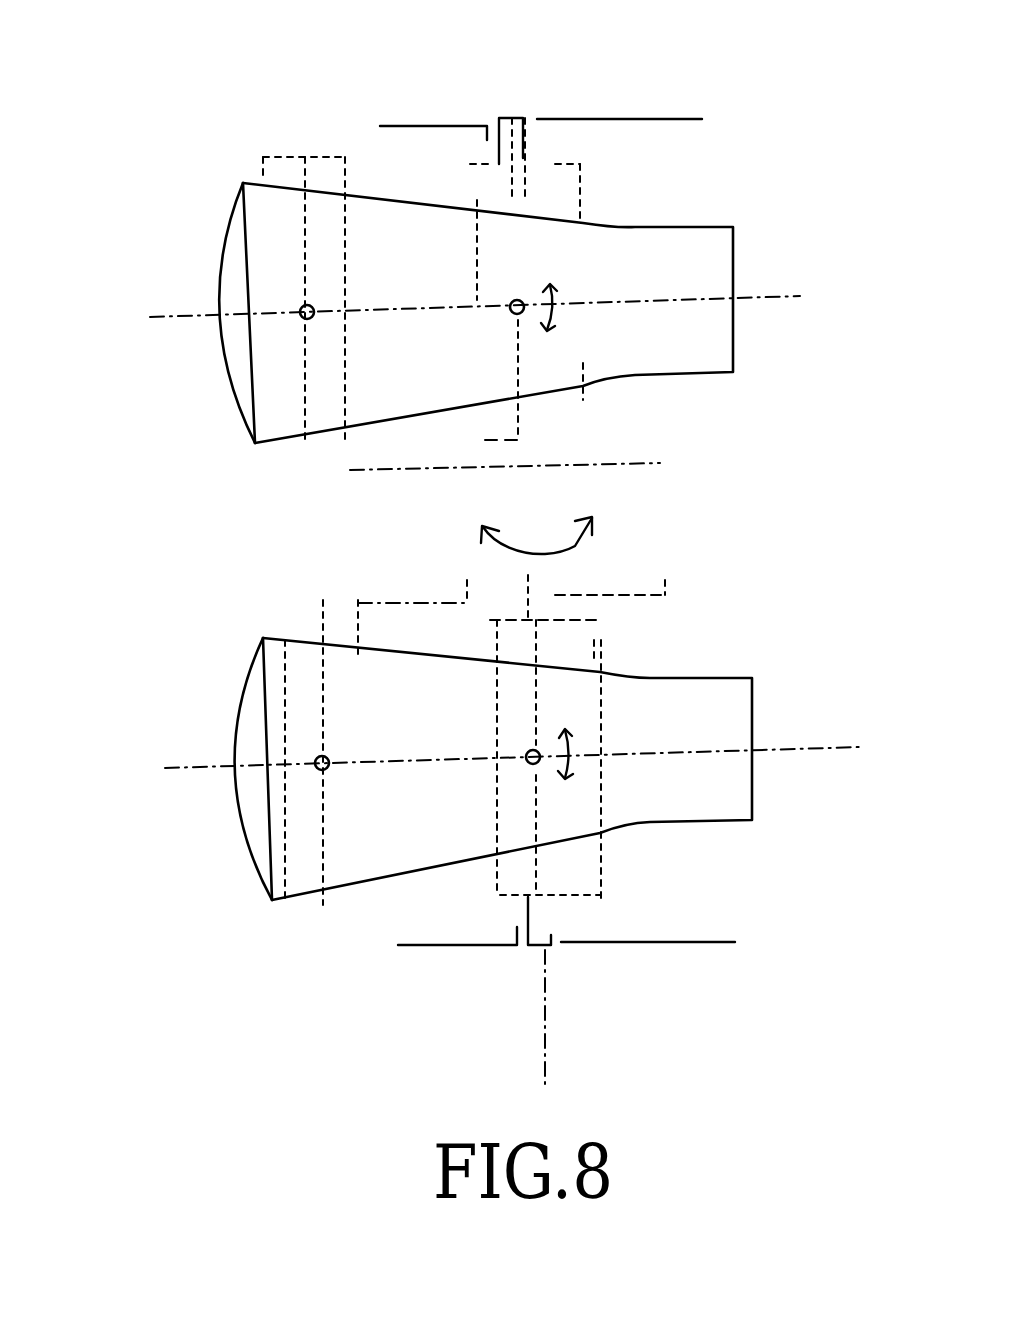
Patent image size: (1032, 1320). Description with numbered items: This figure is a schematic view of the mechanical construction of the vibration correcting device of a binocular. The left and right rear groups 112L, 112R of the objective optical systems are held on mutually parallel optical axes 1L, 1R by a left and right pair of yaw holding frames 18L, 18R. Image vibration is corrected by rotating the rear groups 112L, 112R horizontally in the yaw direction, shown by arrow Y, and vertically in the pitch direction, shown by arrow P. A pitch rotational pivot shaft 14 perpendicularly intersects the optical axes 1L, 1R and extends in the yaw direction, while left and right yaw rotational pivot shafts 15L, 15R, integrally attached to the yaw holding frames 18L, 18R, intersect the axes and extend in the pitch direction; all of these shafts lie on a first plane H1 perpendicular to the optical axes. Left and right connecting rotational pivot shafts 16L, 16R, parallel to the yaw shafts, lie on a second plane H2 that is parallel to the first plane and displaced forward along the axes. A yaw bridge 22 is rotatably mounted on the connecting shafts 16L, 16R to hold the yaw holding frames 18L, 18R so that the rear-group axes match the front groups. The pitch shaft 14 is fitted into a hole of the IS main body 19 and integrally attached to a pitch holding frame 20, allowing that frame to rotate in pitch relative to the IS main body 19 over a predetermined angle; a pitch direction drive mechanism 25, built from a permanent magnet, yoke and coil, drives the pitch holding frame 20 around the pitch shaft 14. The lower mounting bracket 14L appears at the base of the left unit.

The optical axis 1R is at (775, 298).
The optical axis 1L is at (800, 747).
The pitch rotational pivot shaft 14 is at (522, 118).
The support member 14L is at (548, 905).
The yaw rotational pivot shaft 15R is at (510, 302).
The yaw rotational pivot shaft 15L is at (526, 762).
The connecting rotational pivot shaft 16R is at (300, 312).
The connecting rotational pivot shaft 16L is at (317, 758).
The yaw holding frame 18R is at (702, 227).
The yaw holding frame 18L is at (695, 822).
The IS main body 19 is at (665, 119).
The pitch holding frame 20 is at (587, 410).
The yaw bridge 22 is at (390, 553).
The pitch direction drive mechanism 25 is at (655, 537).
The rear group 112R is at (222, 262).
The rear group 112L is at (242, 812).
The yaw direction Y is at (558, 292).
The pitch direction P is at (575, 546).
The first plane H1 is at (545, 1027).
The second plane H2 is at (310, 488).